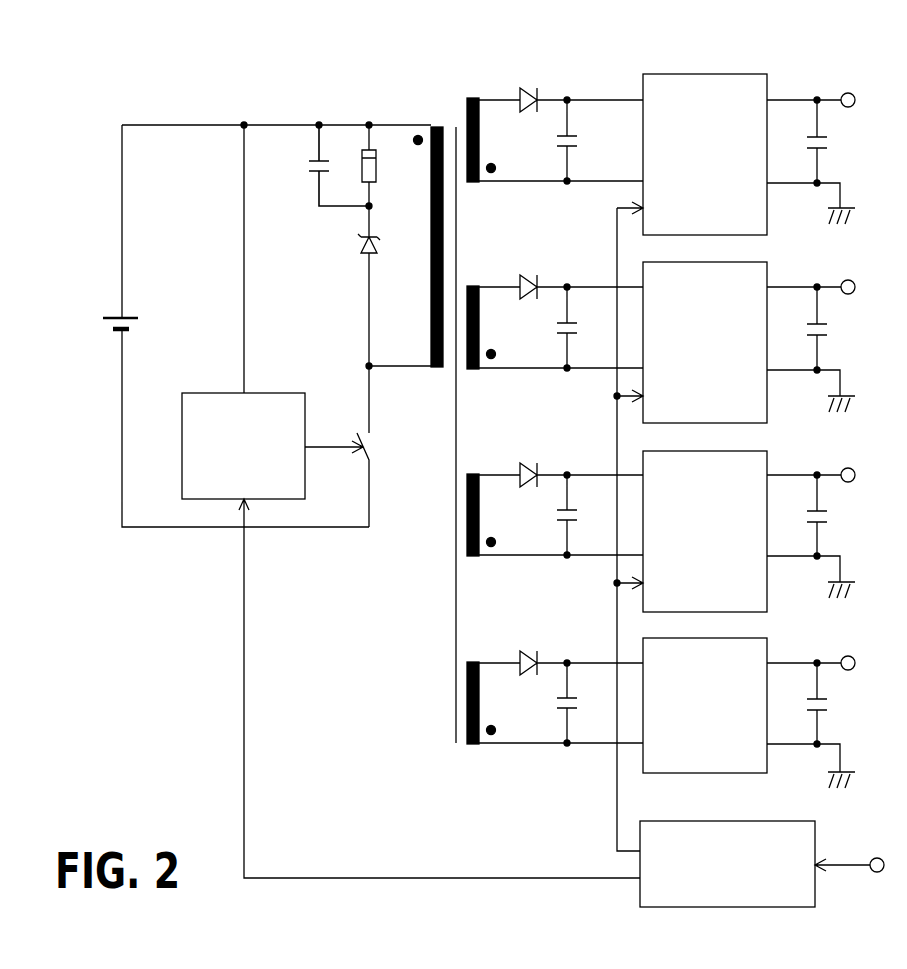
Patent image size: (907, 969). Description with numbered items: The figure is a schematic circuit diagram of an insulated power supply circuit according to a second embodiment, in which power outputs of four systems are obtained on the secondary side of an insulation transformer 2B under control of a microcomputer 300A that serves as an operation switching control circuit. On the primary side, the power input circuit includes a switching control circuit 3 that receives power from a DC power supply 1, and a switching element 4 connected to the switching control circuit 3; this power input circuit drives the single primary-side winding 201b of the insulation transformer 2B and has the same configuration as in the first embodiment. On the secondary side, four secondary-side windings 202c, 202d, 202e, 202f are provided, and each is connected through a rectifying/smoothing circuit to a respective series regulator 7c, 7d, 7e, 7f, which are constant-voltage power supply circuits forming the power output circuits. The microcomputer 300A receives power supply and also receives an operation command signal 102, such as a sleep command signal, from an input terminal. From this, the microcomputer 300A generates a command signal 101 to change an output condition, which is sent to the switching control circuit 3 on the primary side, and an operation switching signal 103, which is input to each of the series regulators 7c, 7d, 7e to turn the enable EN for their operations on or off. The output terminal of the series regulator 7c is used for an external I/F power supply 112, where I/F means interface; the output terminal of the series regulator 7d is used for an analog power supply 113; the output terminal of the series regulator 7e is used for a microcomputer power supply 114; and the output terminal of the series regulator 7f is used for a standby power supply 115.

The DC power supply 1 is at (120, 302).
The insulation transformer 2B is at (446, 102).
The switching control circuit 3 is at (213, 393).
The switching element 4 is at (357, 432).
The series regulator 7c is at (675, 74).
The series regulator 7d is at (760, 262).
The series regulator 7e is at (760, 451).
The series regulator 7f is at (760, 638).
The command signal 101 is at (347, 880).
The operation command signal 102 is at (852, 860).
The operation switching signal 103 is at (617, 805).
The external I/F power supply 112 is at (835, 98).
The analog power supply 113 is at (835, 285).
The microcomputer power supply 114 is at (835, 473).
The standby power supply 115 is at (835, 661).
The primary-side winding 201b is at (431, 345).
The secondary-side winding 202c is at (492, 98).
The secondary-side winding 202d is at (473, 369).
The secondary-side winding 202e is at (473, 556).
The secondary-side winding 202f is at (473, 744).
The microcomputer 300A is at (762, 821).